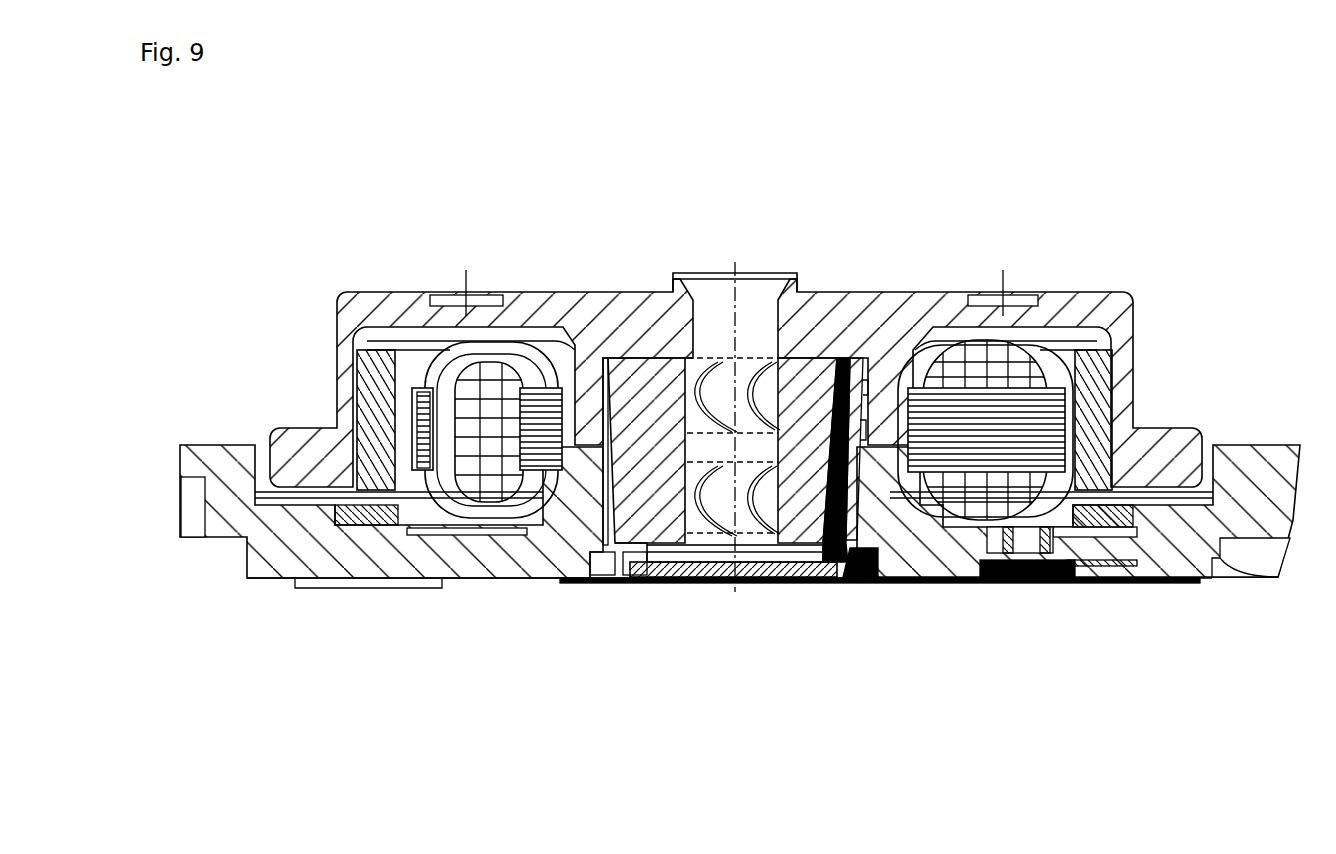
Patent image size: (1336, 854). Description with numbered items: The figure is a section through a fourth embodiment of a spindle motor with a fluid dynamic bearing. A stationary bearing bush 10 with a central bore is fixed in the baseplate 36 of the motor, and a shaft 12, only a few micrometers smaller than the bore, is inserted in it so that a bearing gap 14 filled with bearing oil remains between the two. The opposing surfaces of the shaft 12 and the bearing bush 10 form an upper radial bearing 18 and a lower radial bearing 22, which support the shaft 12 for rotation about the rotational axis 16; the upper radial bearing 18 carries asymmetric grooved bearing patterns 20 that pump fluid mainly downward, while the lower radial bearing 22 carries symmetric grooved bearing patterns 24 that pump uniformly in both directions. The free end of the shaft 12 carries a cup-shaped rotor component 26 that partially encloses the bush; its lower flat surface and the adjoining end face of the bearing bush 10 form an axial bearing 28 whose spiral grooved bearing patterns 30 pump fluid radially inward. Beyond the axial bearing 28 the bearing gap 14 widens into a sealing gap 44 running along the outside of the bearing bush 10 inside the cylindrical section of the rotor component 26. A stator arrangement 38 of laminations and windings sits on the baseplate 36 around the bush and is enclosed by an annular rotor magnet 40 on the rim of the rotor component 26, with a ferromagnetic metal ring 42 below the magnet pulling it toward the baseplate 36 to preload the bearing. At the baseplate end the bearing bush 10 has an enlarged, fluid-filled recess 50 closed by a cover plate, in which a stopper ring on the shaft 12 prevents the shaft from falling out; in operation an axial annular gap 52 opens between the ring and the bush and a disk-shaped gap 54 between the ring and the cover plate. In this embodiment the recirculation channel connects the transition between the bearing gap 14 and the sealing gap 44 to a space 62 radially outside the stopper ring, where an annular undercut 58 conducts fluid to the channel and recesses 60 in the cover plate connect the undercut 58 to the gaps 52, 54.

The bearing bush 10 is at (638, 475).
The shaft 12 is at (705, 530).
The bearing gap 14 is at (836, 356).
The rotational axis 16 is at (735, 270).
The upper radial bearing 18 is at (625, 362).
The grooved bearing patterns 20 is at (696, 385).
The lower radial bearing 22 is at (752, 532).
The grooved bearing patterns 24 is at (676, 570).
The rotor component 26 is at (567, 322).
The axial bearing 28 is at (612, 356).
The grooved bearing patterns 30 is at (798, 353).
The baseplate 36 is at (327, 570).
The stator arrangement 38 is at (1010, 443).
The rotor magnet 40 is at (373, 370).
The ferromagnetic metal ring 42 is at (1127, 507).
The sealing gap 44 is at (880, 402).
The recess 50 is at (650, 565).
The axial annular gap 52 is at (655, 530).
The disk-shaped gap 54 is at (790, 566).
The annular undercut 58 is at (847, 578).
The recesses 60 is at (640, 576).
The space 62 is at (838, 570).